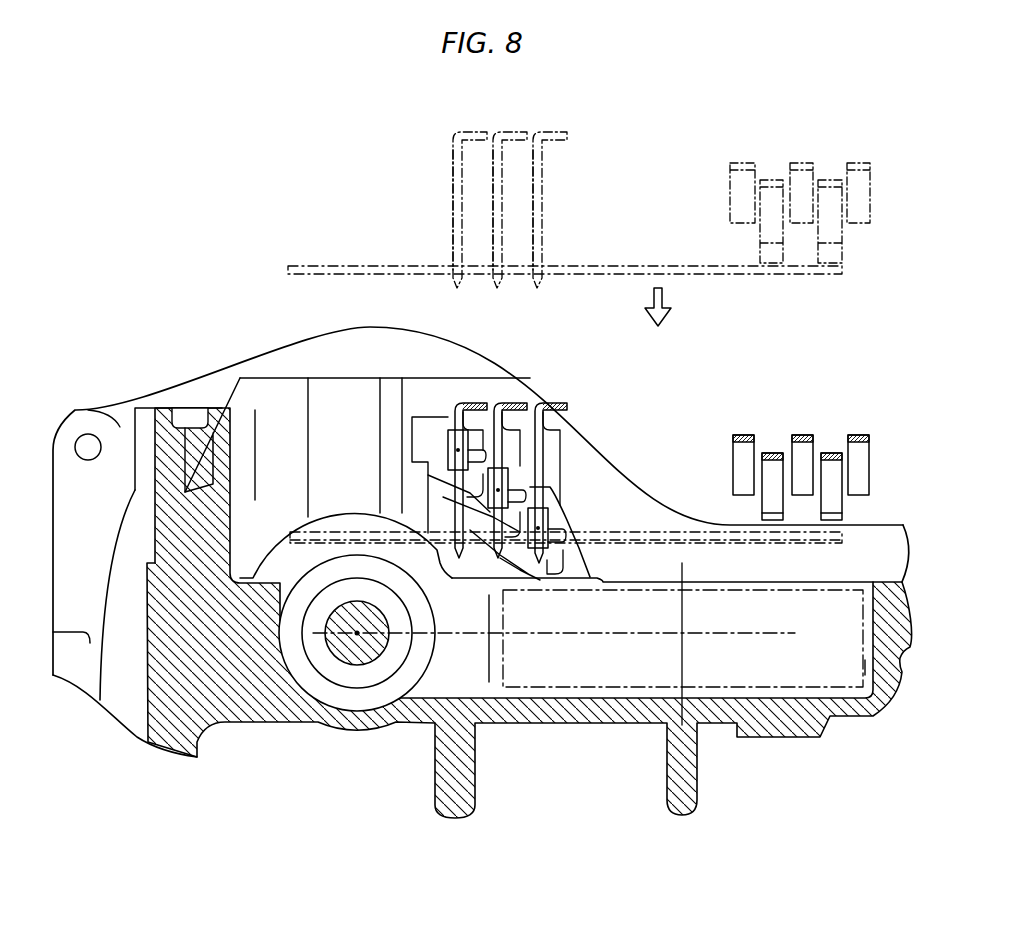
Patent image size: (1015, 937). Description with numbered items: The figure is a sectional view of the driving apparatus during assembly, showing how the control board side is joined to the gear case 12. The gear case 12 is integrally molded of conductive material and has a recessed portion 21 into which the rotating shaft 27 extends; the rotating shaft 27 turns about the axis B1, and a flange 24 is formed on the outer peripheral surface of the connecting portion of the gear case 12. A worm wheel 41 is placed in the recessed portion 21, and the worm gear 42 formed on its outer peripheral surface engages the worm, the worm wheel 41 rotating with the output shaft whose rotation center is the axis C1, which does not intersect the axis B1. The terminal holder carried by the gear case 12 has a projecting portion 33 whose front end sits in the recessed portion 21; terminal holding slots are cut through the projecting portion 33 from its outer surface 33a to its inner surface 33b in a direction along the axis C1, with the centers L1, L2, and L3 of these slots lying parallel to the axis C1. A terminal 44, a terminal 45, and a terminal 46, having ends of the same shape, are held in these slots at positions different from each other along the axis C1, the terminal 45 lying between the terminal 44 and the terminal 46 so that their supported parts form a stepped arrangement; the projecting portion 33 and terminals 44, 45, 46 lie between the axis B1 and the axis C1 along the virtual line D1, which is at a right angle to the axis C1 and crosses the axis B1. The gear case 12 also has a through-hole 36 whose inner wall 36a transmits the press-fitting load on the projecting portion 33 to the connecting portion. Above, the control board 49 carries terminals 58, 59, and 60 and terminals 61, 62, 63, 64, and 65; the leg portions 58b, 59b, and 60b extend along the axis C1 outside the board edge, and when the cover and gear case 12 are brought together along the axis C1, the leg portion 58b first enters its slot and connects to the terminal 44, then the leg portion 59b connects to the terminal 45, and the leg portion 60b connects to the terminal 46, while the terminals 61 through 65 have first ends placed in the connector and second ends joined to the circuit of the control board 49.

The gear case 12 is at (230, 734).
The recessed portion 21 is at (457, 677).
The flange 24 is at (172, 388).
The rotating shaft 27 is at (332, 664).
The axis B1 is at (357, 636).
The projecting portion 33 is at (562, 500).
The outer surface 33a is at (578, 527).
The inner surface 33b is at (345, 447).
The through-hole 36 is at (556, 568).
The inner wall 36a is at (592, 577).
The worm wheel 41 is at (743, 673).
The worm gear 42 is at (890, 665).
The terminal 44 is at (440, 443).
The terminal 45 is at (508, 470).
The terminal 46 is at (553, 545).
The control board 49 is at (320, 262).
The terminal 58 is at (470, 122).
The leg portion 58b is at (453, 163).
The terminal 59 is at (508, 122).
The leg portion 59b is at (493, 200).
The terminal 60 is at (553, 122).
The leg portion 60b is at (542, 217).
The terminal 61 is at (740, 160).
The terminal 62 is at (776, 172).
The terminal 63 is at (803, 160).
The terminal 64 is at (833, 172).
The terminal 65 is at (862, 160).
The axis C1 is at (680, 716).
The virtual line D1 is at (795, 633).
The center L1 is at (458, 450).
The center L2 is at (498, 490).
The center L3 is at (538, 528).